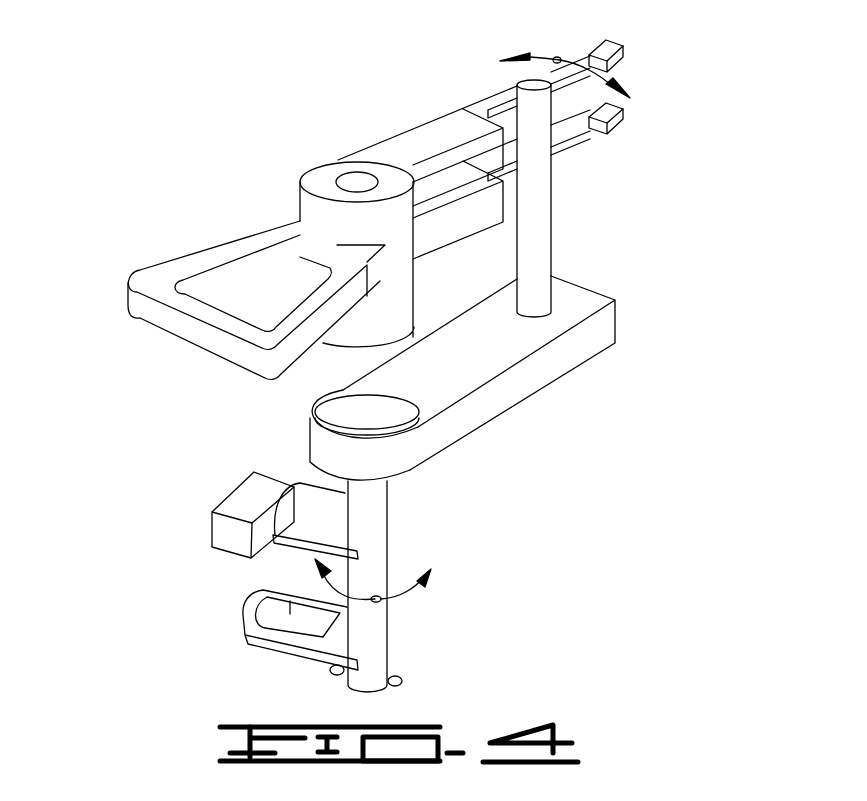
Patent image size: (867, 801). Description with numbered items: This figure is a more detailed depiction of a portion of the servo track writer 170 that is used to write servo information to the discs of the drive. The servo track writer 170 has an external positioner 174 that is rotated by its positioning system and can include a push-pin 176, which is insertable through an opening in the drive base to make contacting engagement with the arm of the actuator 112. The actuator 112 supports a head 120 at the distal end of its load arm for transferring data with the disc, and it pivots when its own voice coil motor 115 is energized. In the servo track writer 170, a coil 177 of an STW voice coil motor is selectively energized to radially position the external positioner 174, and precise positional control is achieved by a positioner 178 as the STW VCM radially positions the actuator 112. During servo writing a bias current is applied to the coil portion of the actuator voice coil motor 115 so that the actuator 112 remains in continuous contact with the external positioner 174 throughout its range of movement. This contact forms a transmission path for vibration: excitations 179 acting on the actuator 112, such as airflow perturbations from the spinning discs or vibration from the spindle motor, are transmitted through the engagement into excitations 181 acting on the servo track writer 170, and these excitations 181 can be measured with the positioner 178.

The actuator 112 is at (495, 173).
The voice coil motor 115 is at (155, 267).
The head 120 is at (620, 42).
The servo track writer 170 is at (444, 386).
The external positioner 174 is at (615, 323).
The push-pin 176 is at (551, 227).
The coil 177 is at (247, 613).
The positioner 178 is at (238, 487).
The excitations 179 is at (557, 57).
The excitations 181 is at (378, 603).